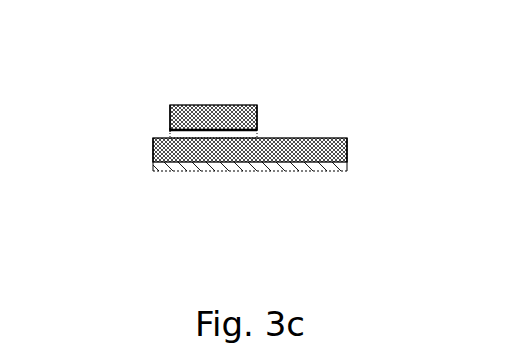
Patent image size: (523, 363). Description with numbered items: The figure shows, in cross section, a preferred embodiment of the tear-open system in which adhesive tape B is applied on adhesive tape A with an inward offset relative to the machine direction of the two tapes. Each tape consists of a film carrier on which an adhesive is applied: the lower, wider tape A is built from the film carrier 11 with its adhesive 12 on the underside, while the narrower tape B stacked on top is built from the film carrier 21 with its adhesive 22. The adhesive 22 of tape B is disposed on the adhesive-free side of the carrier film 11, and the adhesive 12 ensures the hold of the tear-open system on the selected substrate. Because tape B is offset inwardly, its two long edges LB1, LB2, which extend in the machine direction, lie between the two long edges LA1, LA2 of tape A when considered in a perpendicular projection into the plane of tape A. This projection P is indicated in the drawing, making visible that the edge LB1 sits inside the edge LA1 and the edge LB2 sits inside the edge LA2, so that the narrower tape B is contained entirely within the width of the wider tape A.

The film carrier 11 is at (160, 152).
The adhesive 12 is at (307, 168).
The film carrier 21 is at (192, 117).
The adhesive 22 is at (229, 133).
The projection P is at (170, 127).
The long edge of adhesive tape B LB1 is at (170, 108).
The long edge of adhesive tape B LB2 is at (259, 108).
The long edge of adhesive tape A LA1 is at (153, 157).
The long edge of adhesive tape A LA2 is at (347, 153).